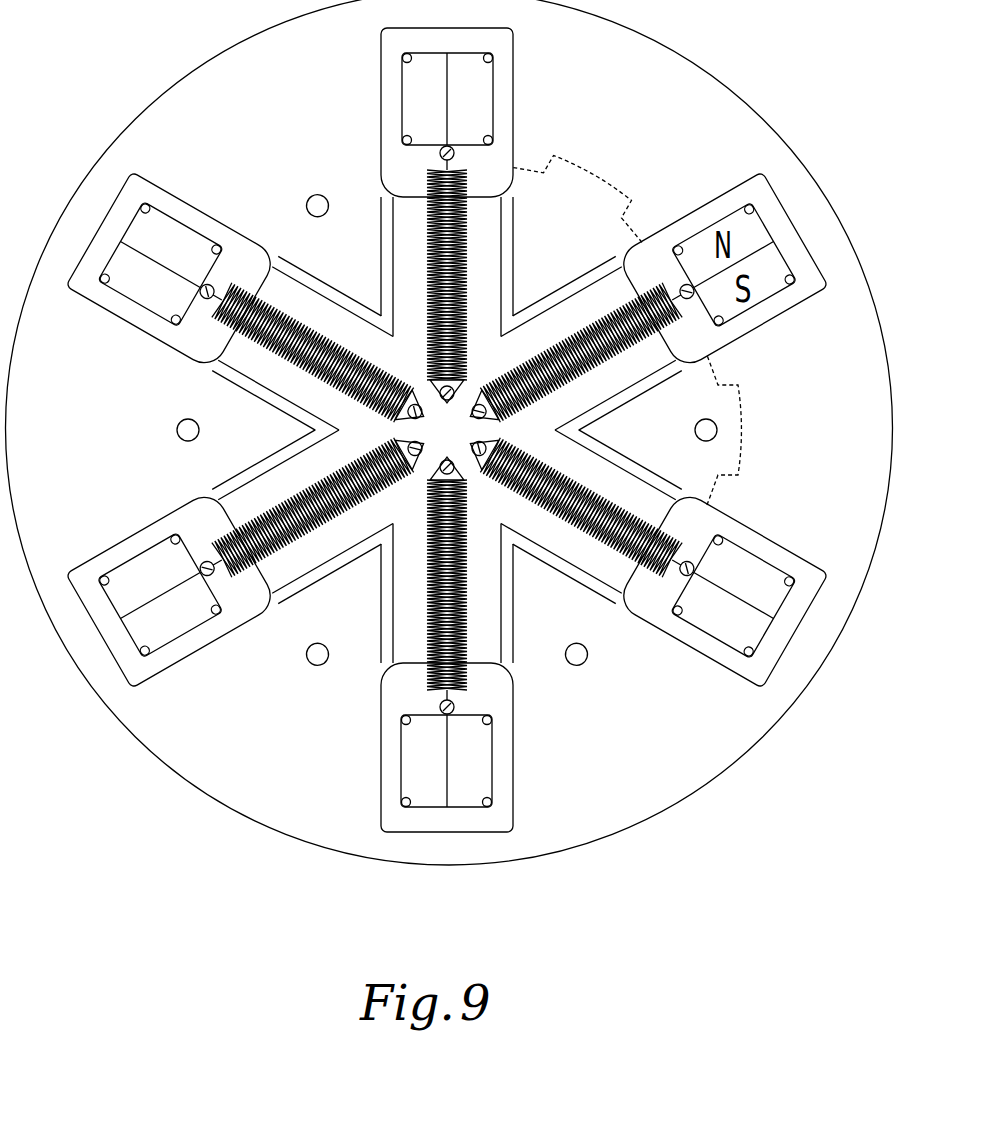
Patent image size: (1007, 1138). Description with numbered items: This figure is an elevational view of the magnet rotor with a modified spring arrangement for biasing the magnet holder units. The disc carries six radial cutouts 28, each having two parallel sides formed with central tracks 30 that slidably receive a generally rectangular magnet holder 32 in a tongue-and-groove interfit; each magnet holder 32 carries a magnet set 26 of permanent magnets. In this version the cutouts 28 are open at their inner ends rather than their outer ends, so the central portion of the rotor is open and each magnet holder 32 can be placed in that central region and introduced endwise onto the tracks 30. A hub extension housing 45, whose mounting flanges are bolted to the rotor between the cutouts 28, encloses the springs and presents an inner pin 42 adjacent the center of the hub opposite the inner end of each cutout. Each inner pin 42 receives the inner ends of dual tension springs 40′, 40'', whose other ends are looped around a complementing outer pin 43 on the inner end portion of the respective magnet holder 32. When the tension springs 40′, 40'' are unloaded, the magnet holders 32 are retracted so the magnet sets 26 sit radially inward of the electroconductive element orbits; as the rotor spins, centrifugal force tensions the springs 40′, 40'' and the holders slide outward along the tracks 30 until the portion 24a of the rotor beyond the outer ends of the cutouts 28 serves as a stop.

The portion of the magnet rotor 24a is at (249, 46).
The magnet set 26 is at (415, 77).
The radial cutout 28 is at (267, 373).
The track 30 is at (662, 379).
The magnet holder 32 is at (390, 153).
The tension spring 40′ is at (200, 362).
The tension spring 40'' is at (282, 348).
The inner pin 42 is at (422, 412).
The outer pin 43 is at (452, 155).
The hub extension housing 45 is at (597, 173).